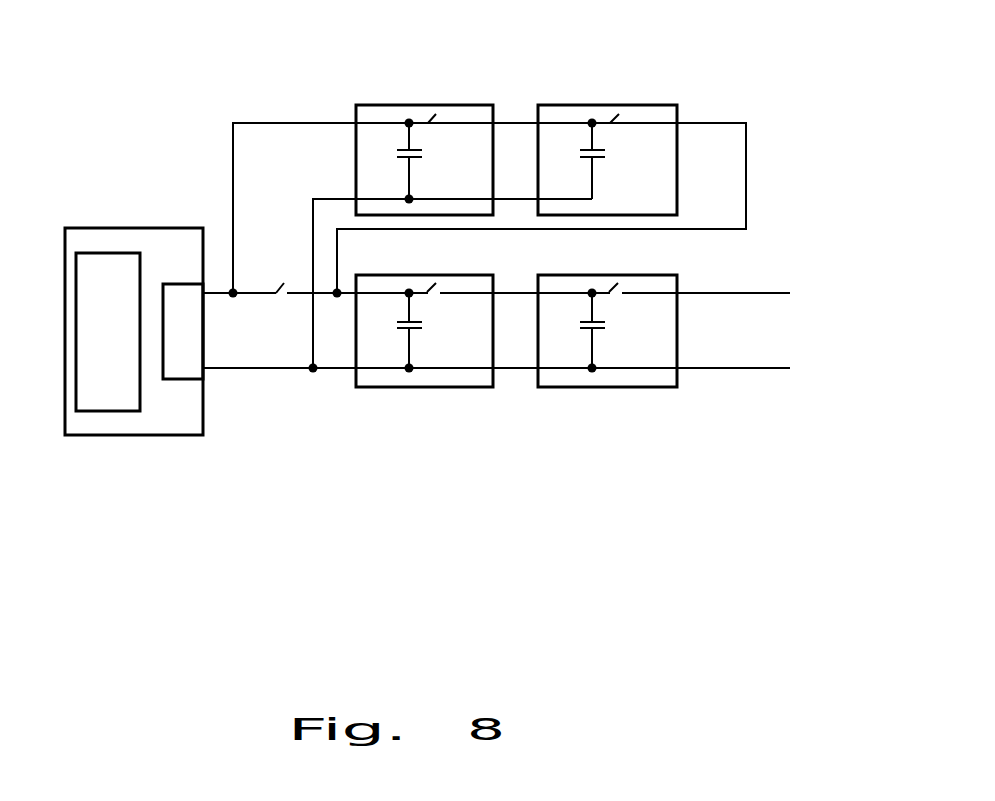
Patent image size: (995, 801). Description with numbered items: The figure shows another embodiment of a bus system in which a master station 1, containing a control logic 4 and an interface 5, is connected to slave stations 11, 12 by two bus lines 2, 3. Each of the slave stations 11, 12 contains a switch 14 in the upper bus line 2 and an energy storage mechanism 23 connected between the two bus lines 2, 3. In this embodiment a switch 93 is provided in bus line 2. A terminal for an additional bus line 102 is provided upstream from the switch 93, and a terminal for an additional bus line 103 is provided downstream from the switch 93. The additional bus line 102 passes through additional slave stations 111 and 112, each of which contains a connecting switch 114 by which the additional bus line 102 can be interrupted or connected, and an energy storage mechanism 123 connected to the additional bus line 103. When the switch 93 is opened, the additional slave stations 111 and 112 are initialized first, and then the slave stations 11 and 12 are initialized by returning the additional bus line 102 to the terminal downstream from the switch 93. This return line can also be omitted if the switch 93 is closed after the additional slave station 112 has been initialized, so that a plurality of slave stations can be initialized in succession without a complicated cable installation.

The master station 1 is at (106, 228).
The control logic 4 is at (88, 315).
The interface 5 is at (183, 371).
The bus line 2 is at (776, 292).
The bus line 3 is at (778, 369).
The slave station 11 is at (465, 387).
The slave station 12 is at (646, 387).
The switch 14 is at (428, 291).
The energy storage mechanism 23 is at (402, 330).
The switch 93 is at (283, 295).
The additional bus line 102 is at (233, 183).
The additional bus line 103 is at (312, 258).
The additional slave station 111 is at (368, 105).
The additional slave station 112 is at (549, 105).
The connecting switch 114 is at (429, 119).
The energy storage mechanism 123 is at (400, 159).